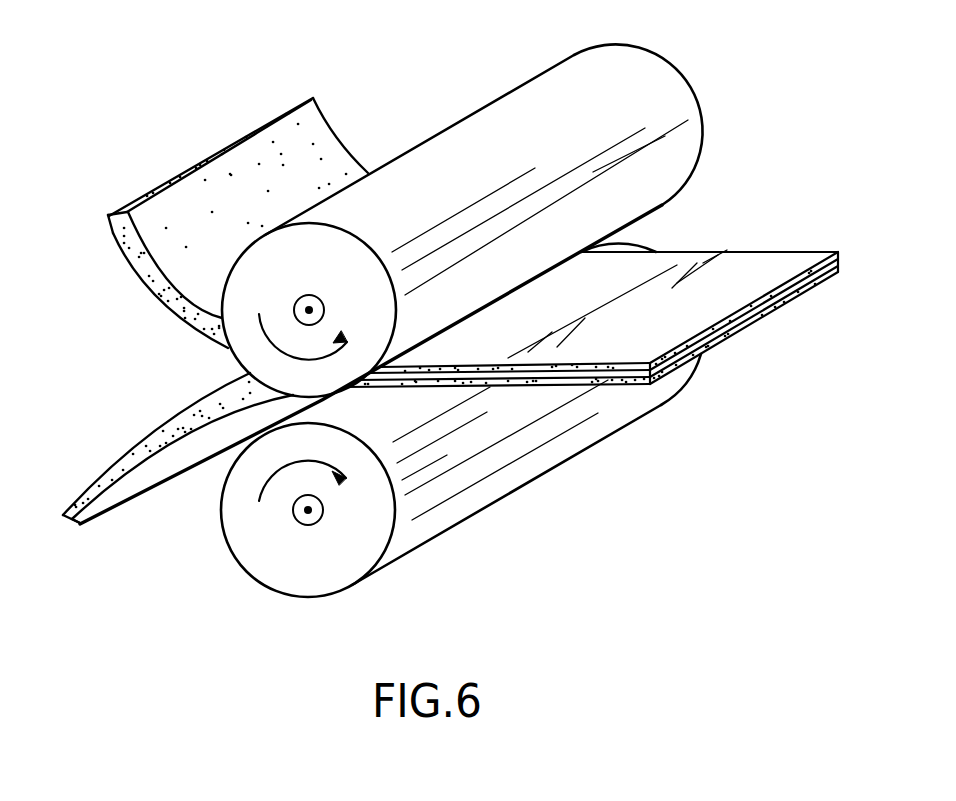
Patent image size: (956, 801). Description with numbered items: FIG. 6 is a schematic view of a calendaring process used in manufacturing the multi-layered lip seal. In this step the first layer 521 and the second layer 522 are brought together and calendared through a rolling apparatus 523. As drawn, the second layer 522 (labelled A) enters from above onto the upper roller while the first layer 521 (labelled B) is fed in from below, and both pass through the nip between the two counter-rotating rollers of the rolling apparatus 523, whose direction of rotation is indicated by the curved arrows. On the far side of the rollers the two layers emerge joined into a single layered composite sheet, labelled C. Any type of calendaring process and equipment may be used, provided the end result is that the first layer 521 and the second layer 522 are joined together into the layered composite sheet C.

The first layer 521 is at (160, 476).
The second layer 522 is at (210, 223).
The rolling apparatus 523 is at (362, 555).
The second sheet material A is at (112, 237).
The first sheet material B is at (70, 496).
The laminated plate C is at (665, 260).